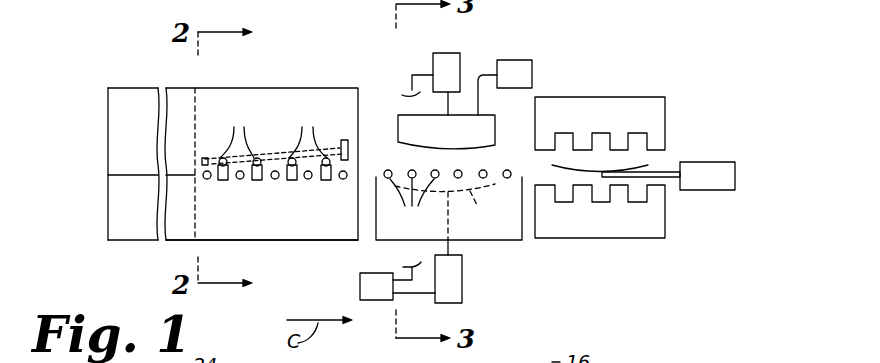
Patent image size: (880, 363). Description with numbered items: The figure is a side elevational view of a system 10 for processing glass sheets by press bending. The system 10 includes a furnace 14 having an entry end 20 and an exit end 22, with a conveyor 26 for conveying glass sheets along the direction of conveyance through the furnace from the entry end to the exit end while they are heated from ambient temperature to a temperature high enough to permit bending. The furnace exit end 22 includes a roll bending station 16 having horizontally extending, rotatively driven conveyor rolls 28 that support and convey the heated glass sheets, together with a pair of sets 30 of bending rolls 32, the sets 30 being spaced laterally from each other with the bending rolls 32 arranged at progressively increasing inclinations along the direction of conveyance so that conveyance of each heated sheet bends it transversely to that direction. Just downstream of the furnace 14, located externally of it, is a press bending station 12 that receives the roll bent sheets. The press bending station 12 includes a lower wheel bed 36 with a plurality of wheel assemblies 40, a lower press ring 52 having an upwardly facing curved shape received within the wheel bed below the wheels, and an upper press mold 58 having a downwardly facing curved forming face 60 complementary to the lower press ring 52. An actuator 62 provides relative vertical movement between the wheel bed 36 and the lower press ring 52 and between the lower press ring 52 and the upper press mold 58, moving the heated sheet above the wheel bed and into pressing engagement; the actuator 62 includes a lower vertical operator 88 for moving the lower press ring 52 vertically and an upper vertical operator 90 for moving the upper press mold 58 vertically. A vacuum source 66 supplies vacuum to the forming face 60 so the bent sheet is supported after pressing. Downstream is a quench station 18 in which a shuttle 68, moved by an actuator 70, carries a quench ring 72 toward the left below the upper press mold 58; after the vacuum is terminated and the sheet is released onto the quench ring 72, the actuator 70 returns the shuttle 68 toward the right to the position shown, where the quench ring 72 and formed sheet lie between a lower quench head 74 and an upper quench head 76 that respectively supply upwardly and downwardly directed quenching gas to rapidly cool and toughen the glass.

The system 10 is at (541, 49).
The press bending station 12 is at (421, 59).
The furnace 14 is at (142, 61).
The roll bending station 16 is at (303, 80).
The quench station 18 is at (623, 82).
The entry end 20 is at (128, 87).
The exit end 22 is at (311, 241).
The conveyor 26 is at (133, 174).
The conveyor rolls 28 is at (209, 179).
The sets of bending rolls 30 is at (269, 148).
The bending rolls 32 is at (274, 140).
The wheel bed 36 is at (505, 200).
The wheel assemblies 40 is at (447, 201).
The lower press ring 52 is at (445, 208).
The upper press mold 58 is at (398, 125).
The forming face 60 is at (482, 147).
The actuator 62 is at (352, 283).
The vacuum source 66 is at (515, 60).
The shuttle 68 is at (665, 164).
The actuator 70 is at (710, 181).
The quench ring 72 is at (641, 167).
The lower quench head 74 is at (625, 228).
The upper quench head 76 is at (640, 106).
The lower vertical operator 88 is at (452, 284).
The upper vertical operator 90 is at (446, 57).